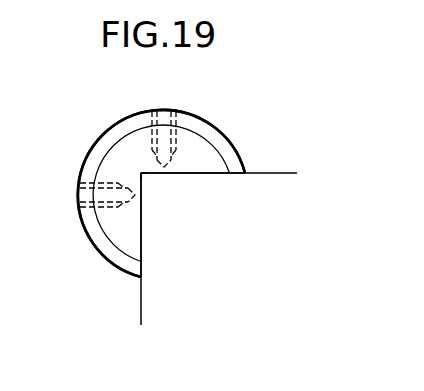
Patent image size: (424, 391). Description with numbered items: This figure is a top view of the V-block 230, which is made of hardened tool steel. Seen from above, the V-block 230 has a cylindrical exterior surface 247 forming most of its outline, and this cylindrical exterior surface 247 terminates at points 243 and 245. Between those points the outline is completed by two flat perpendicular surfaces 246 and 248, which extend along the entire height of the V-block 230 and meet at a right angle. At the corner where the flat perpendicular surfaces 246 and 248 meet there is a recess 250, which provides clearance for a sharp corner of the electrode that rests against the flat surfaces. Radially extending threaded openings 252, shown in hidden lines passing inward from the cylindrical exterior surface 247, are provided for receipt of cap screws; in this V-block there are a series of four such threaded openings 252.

The V-block 230 is at (241, 145).
The point 243 is at (245, 179).
The point 245 is at (151, 262).
The flat perpendicular surface 246 is at (211, 174).
The cylindrical exterior surface 247 is at (122, 121).
The flat perpendicular surface 248 is at (142, 246).
The recess 250 is at (140, 172).
The threaded opening 252 is at (174, 106).